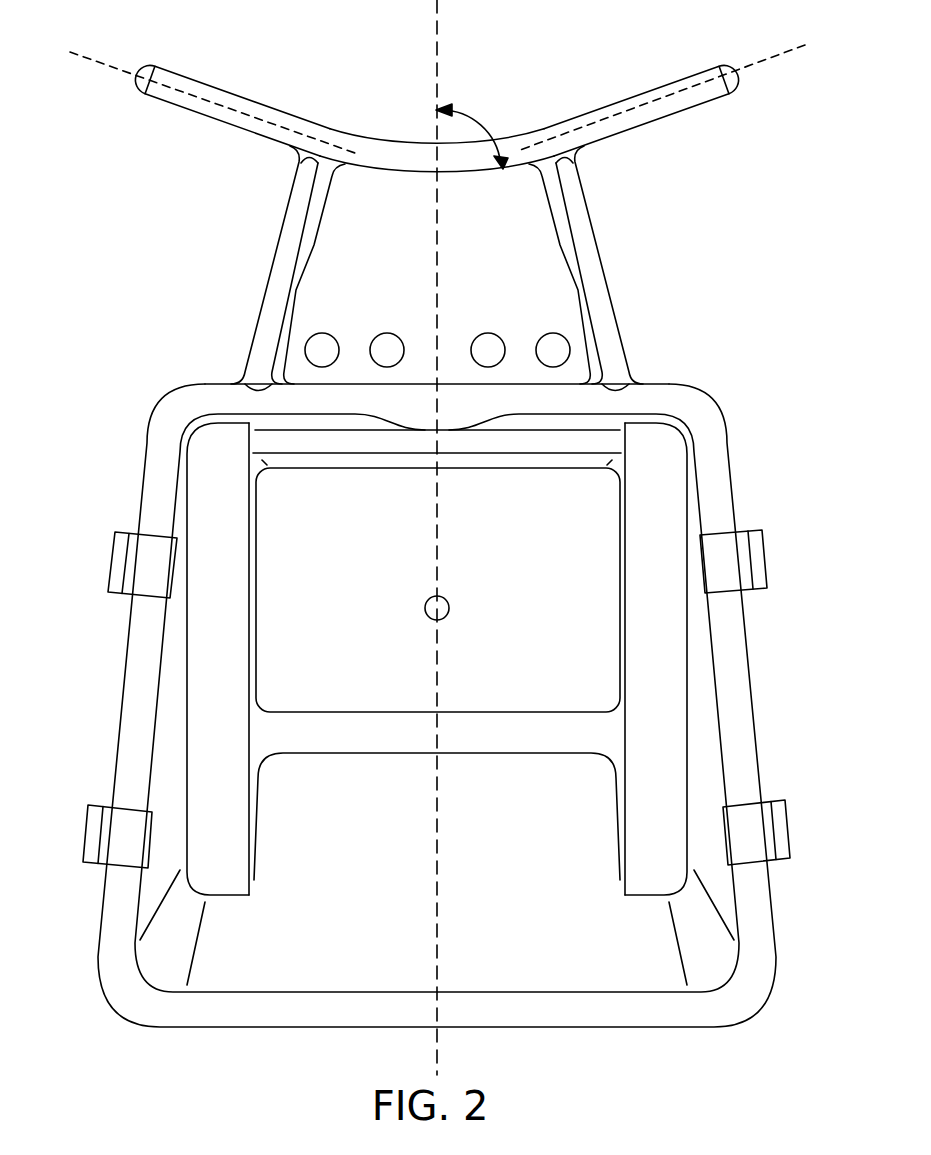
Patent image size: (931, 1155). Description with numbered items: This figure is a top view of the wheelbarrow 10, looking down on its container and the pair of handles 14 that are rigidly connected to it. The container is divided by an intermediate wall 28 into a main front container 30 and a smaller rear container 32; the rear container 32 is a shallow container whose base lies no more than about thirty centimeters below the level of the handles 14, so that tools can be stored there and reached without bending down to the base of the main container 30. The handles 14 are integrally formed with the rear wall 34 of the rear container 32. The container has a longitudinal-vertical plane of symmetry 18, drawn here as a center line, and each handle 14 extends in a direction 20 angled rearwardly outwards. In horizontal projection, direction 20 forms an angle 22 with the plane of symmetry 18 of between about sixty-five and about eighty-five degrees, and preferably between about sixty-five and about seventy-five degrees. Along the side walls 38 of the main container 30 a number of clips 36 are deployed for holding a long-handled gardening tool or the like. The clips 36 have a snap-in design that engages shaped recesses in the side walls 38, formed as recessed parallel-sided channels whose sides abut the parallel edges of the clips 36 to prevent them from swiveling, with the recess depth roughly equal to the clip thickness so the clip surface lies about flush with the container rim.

The wheelbarrow 10 is at (731, 288).
The handles 14 is at (208, 113).
The longitudinal-vertical plane of symmetry 18 is at (440, 33).
The direction 20 is at (87, 60).
The angle 22 is at (477, 127).
The intermediate wall 28 is at (562, 397).
The main front container 30 is at (600, 518).
The rear container 32 is at (555, 278).
The rear wall 34 is at (462, 155).
The clips 36 is at (147, 575).
The side walls 38 is at (137, 727).